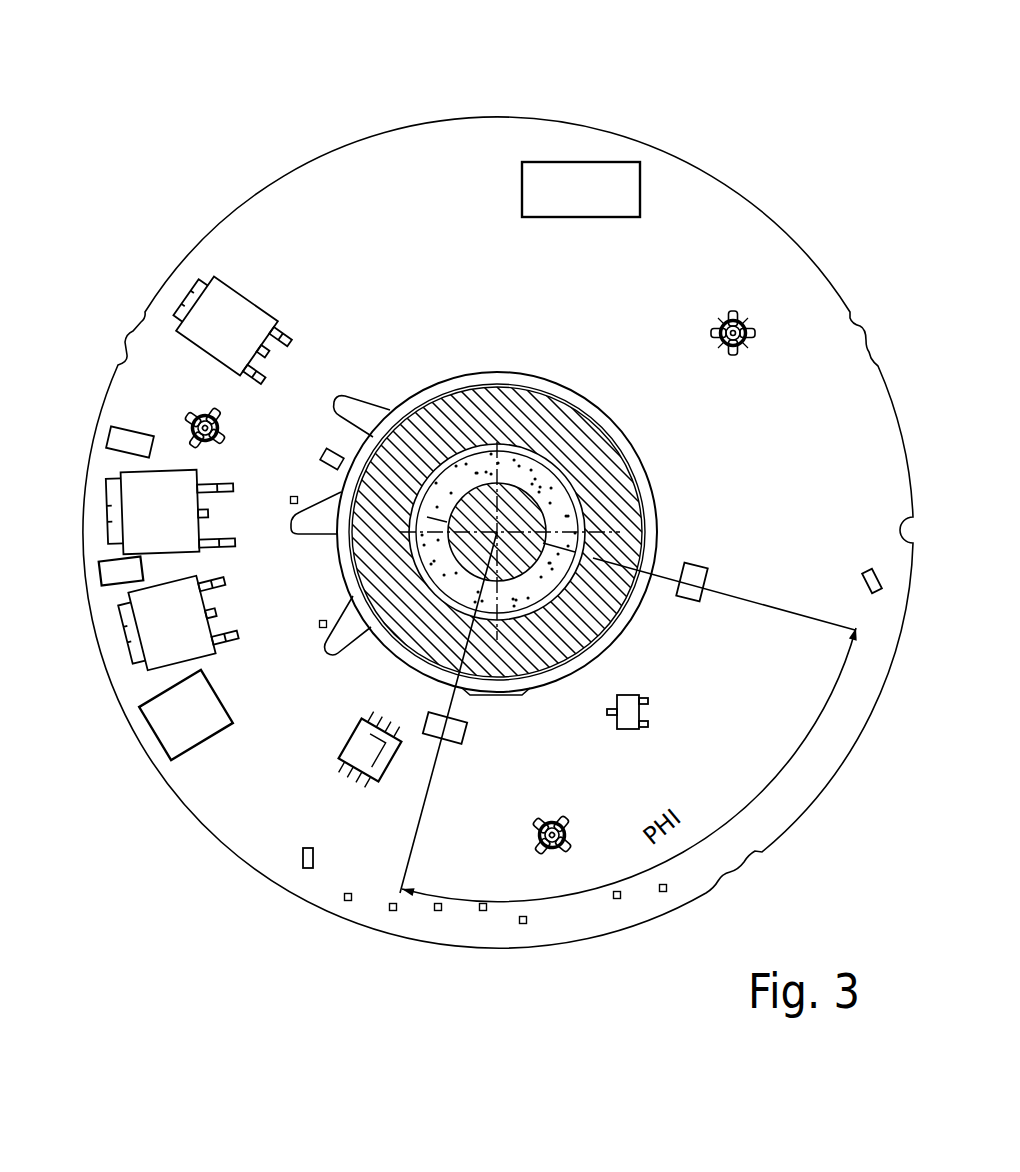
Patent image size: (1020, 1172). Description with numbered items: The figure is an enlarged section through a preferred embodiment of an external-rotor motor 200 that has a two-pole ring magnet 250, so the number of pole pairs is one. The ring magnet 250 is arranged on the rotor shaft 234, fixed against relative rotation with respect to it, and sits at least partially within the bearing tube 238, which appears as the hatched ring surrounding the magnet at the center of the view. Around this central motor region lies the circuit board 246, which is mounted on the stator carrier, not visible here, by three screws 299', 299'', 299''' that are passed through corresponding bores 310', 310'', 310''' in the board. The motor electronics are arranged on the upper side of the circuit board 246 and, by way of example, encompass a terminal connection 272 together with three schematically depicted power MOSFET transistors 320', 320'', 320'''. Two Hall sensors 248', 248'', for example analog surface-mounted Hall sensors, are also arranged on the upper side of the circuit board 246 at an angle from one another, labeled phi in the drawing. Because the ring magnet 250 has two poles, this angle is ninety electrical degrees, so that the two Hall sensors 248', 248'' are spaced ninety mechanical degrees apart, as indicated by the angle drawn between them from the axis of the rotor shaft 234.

The external-rotor motor 200 is at (315, 102).
The circuit board 246 is at (712, 172).
The terminal connection 272 is at (522, 183).
The bearing tube 238 is at (483, 407).
The ring magnet 250 is at (507, 467).
The rotor shaft 234 is at (548, 503).
The screw 299' is at (675, 309).
The bore 310' is at (789, 390).
The screw 299'' is at (515, 815).
The bore 310'' is at (618, 800).
The screw 299''' is at (146, 351).
The bore 310''' is at (316, 392).
The power MOSFET 320' is at (176, 292).
The power MOSFET 320'' is at (146, 423).
The power MOSFET 320''' is at (154, 683).
The Hall sensor 248' is at (708, 553).
The Hall sensor 248'' is at (505, 731).